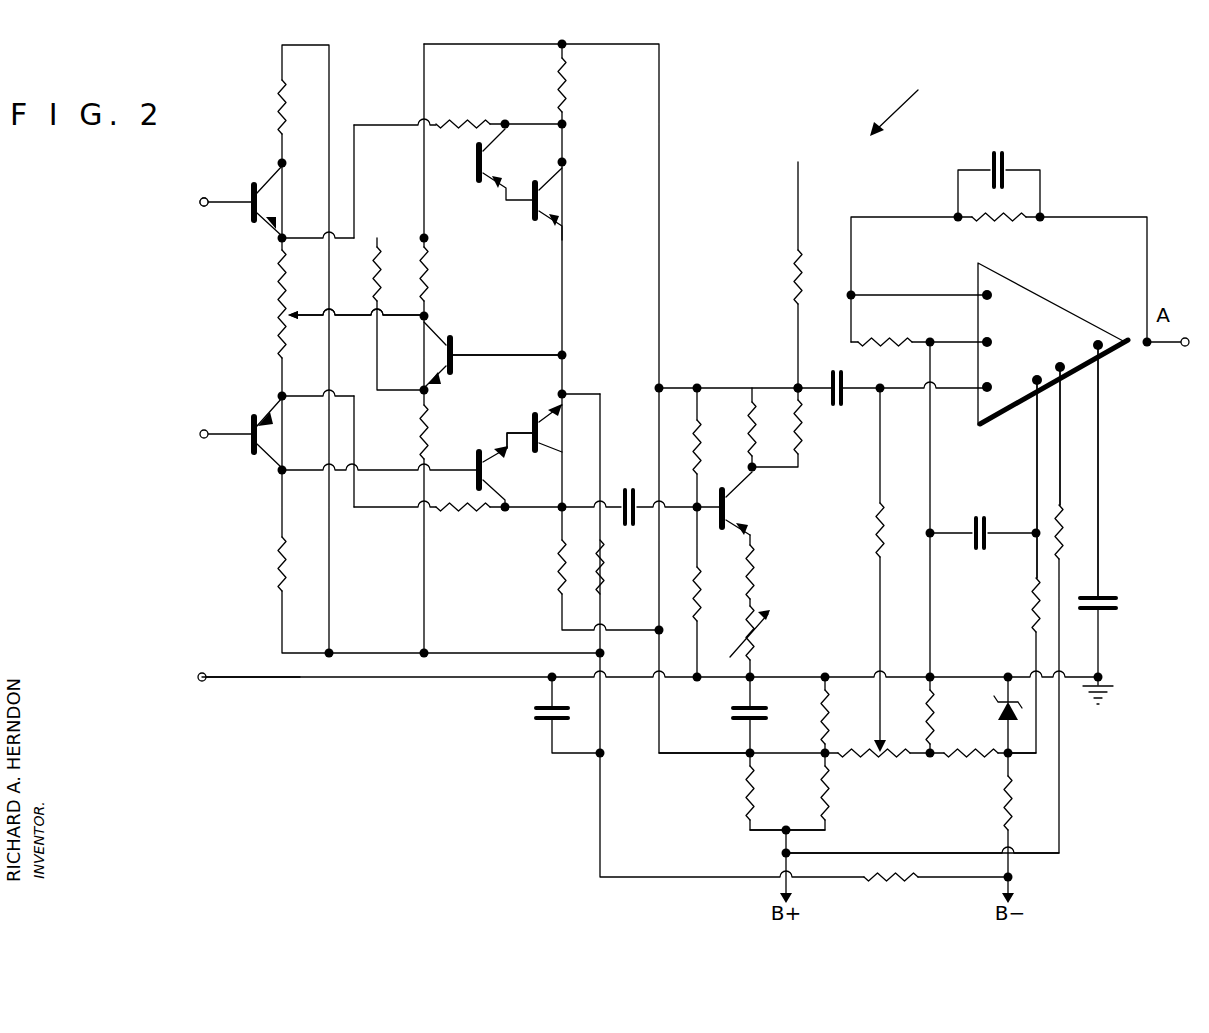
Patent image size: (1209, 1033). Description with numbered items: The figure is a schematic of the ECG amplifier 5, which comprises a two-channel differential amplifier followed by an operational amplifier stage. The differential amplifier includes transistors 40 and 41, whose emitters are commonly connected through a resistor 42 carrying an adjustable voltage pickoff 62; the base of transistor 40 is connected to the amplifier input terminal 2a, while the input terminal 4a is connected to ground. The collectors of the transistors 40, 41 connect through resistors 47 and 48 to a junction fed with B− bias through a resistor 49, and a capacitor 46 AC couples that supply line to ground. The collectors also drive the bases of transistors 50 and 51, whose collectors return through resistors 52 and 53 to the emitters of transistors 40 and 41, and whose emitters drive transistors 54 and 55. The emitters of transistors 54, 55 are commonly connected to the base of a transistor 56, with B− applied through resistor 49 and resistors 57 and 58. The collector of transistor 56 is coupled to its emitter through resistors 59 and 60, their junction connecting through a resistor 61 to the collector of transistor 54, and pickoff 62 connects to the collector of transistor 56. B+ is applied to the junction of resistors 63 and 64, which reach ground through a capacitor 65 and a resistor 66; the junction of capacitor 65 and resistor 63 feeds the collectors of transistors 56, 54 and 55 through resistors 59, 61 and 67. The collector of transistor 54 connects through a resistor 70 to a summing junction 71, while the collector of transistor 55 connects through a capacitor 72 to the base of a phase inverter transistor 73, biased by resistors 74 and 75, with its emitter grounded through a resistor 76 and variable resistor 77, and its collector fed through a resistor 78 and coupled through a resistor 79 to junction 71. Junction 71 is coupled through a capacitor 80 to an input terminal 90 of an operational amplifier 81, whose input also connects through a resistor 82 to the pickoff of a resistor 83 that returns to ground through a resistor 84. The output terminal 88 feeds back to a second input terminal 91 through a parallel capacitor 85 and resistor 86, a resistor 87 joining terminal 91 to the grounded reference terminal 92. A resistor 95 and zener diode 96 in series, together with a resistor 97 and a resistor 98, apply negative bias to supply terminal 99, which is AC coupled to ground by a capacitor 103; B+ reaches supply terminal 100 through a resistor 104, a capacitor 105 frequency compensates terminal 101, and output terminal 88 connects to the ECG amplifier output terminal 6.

The amplifier input terminal 2a is at (200, 202).
The input terminal 4a is at (198, 677).
The ECG amplifier 5 is at (901, 102).
The ECG amplifier output terminal 6 is at (1186, 338).
The transistor 40 is at (250, 190).
The transistor 41 is at (250, 420).
The resistor 42 is at (276, 315).
The capacitor 46 is at (534, 716).
The resistor 47 is at (274, 106).
The resistor 48 is at (274, 565).
The resistor 49 is at (888, 882).
The transistor 50 is at (476, 174).
The transistor 51 is at (476, 454).
The resistor 52 is at (466, 120).
The resistor 53 is at (454, 512).
The transistor 54 is at (530, 216).
The transistor 55 is at (532, 420).
The transistor 56 is at (454, 342).
The resistor 57 is at (420, 426).
The resistor 58 is at (602, 569).
The resistor 59 is at (430, 268).
The resistor 60 is at (372, 272).
The resistor 61 is at (566, 89).
The adjustable voltage pickoff 62 is at (316, 318).
The resistor 63 is at (746, 792).
The resistor 64 is at (822, 792).
The capacitor 65 is at (731, 716).
The resistor 66 is at (822, 716).
The resistor 67 is at (558, 569).
The resistor 70 is at (792, 274).
The summing junction 71 is at (796, 386).
The capacitor 72 is at (628, 488).
The transistor 73 is at (718, 488).
The resistor 74 is at (706, 442).
The resistor 75 is at (702, 600).
The resistor 76 is at (756, 572).
The variable resistor 77 is at (758, 634).
The resistor 78 is at (754, 428).
The resistor 79 is at (802, 430).
The capacitor 80 is at (836, 370).
The operational amplifier 81 is at (1042, 298).
The resistor 82 is at (876, 530).
The resistor 83 is at (875, 758).
The resistor 84 is at (934, 718).
The capacitor 85 is at (998, 151).
The resistor 86 is at (998, 224).
The resistor 87 is at (894, 340).
The output terminal 88 is at (1149, 344).
The input terminal 90 is at (986, 386).
The second input terminal 91 is at (986, 292).
The reference terminal 92 is at (986, 340).
The resistor 95 is at (1004, 804).
The zener diode 96 is at (998, 712).
The resistor 97 is at (968, 758).
The resistor 98 is at (1030, 598).
The amplifier voltage supply terminal 99 is at (1036, 384).
The amplifier voltage supply terminal 100 is at (1062, 370).
The frequency compensation terminal 101 is at (1100, 348).
The capacitor 103 is at (978, 516).
The resistor 104 is at (1064, 524).
The capacitor 105 is at (1118, 602).